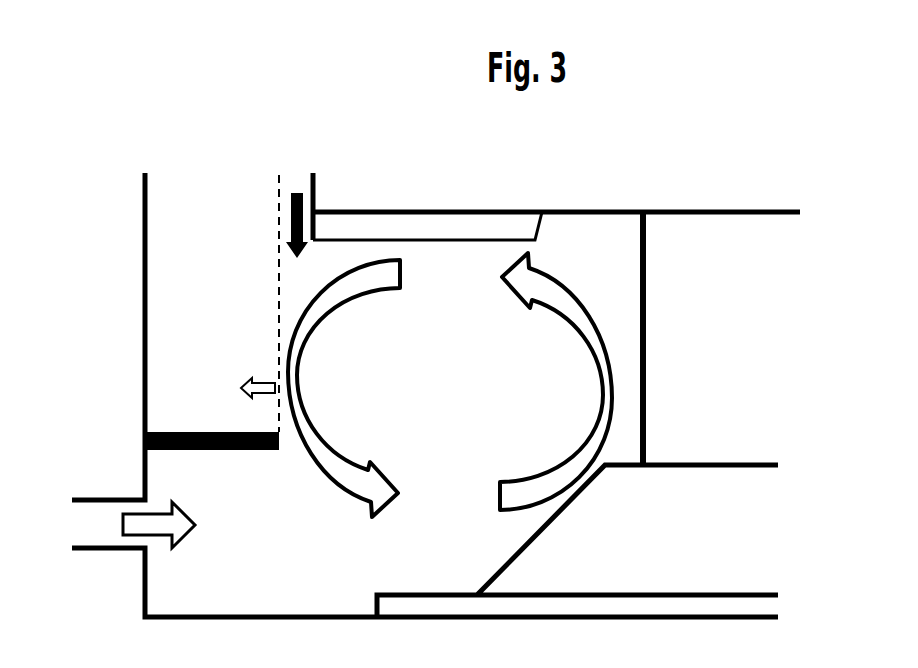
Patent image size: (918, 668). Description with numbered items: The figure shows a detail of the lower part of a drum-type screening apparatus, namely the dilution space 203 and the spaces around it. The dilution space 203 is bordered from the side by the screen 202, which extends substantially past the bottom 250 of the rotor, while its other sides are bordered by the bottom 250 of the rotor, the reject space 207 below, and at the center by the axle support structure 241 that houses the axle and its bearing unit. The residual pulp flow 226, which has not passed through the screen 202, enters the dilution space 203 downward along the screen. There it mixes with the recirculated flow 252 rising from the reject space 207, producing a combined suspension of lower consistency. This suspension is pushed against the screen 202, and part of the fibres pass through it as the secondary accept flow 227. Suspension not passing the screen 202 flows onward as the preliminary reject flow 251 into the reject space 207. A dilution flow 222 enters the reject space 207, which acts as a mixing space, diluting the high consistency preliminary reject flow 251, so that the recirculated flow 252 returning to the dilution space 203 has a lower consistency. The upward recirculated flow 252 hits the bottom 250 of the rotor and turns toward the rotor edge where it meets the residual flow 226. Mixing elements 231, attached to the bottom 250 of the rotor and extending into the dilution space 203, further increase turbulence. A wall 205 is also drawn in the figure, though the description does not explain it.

The screen 202 is at (276, 272).
The dilution space 203 is at (450, 375).
The chamber wall 205 is at (297, 168).
The reject space 207 is at (385, 530).
The dilution flow 222 is at (183, 538).
The residual pulp flow 226 is at (281, 212).
The secondary accept flow 227 is at (241, 373).
The mixing elements 231 is at (427, 228).
The axle support structure 241 is at (577, 541).
The bottom of the rotor 250 is at (595, 212).
The preliminary reject flow 251 is at (312, 438).
The recirculated flow 252 is at (602, 423).